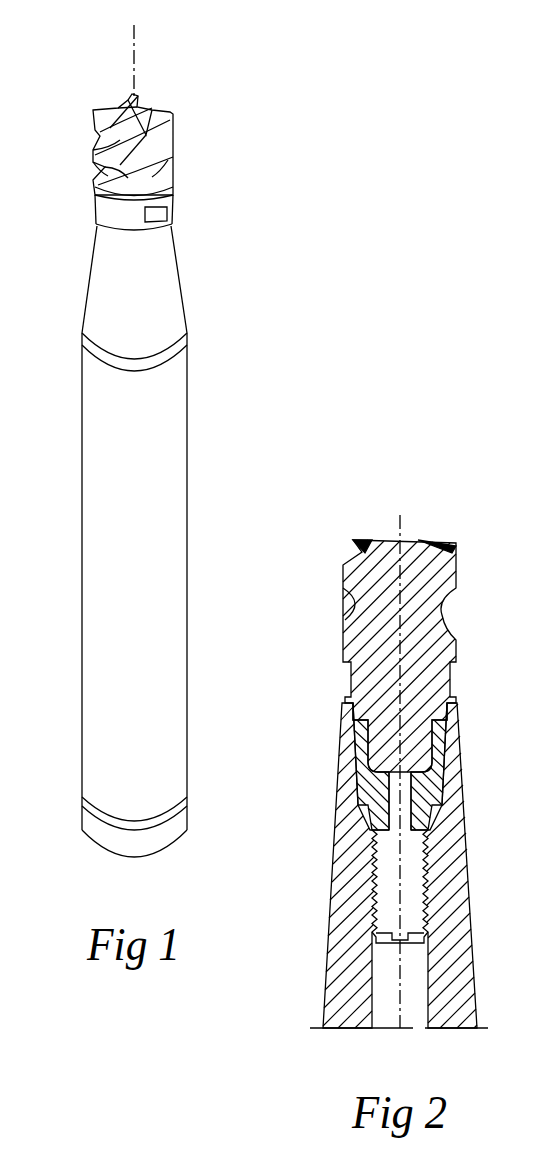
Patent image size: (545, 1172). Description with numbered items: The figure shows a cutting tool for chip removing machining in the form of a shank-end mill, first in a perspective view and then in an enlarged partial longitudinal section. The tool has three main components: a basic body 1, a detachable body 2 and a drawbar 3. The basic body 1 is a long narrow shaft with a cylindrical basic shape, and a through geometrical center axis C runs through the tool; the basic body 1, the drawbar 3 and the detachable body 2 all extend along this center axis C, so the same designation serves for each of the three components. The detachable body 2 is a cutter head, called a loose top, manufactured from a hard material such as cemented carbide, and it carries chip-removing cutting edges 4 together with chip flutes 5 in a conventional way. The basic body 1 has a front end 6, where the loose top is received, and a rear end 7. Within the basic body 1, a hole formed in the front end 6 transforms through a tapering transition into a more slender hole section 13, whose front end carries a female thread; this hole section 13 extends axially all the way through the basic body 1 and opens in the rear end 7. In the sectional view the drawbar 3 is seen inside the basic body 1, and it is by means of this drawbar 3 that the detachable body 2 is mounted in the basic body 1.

In FIG. 2, the basic body 1 is at (318, 982).
In FIG. 1, the detachable body 2 is at (203, 125).
In FIG. 2, the detachable body 2 is at (463, 600).
In FIG. 2, the drawbar 3 is at (437, 821).
In FIG. 1, the cutting edges 4 is at (160, 108).
In FIG. 1, the chip flutes 5 is at (113, 173).
In FIG. 2, the chip flutes 5 is at (350, 620).
In FIG. 1, the front end 6 is at (178, 210).
In FIG. 1, the rear end 7 is at (187, 832).
In FIG. 2, the hole section 13 is at (395, 892).
In FIG. 1, the center axis C is at (134, 63).